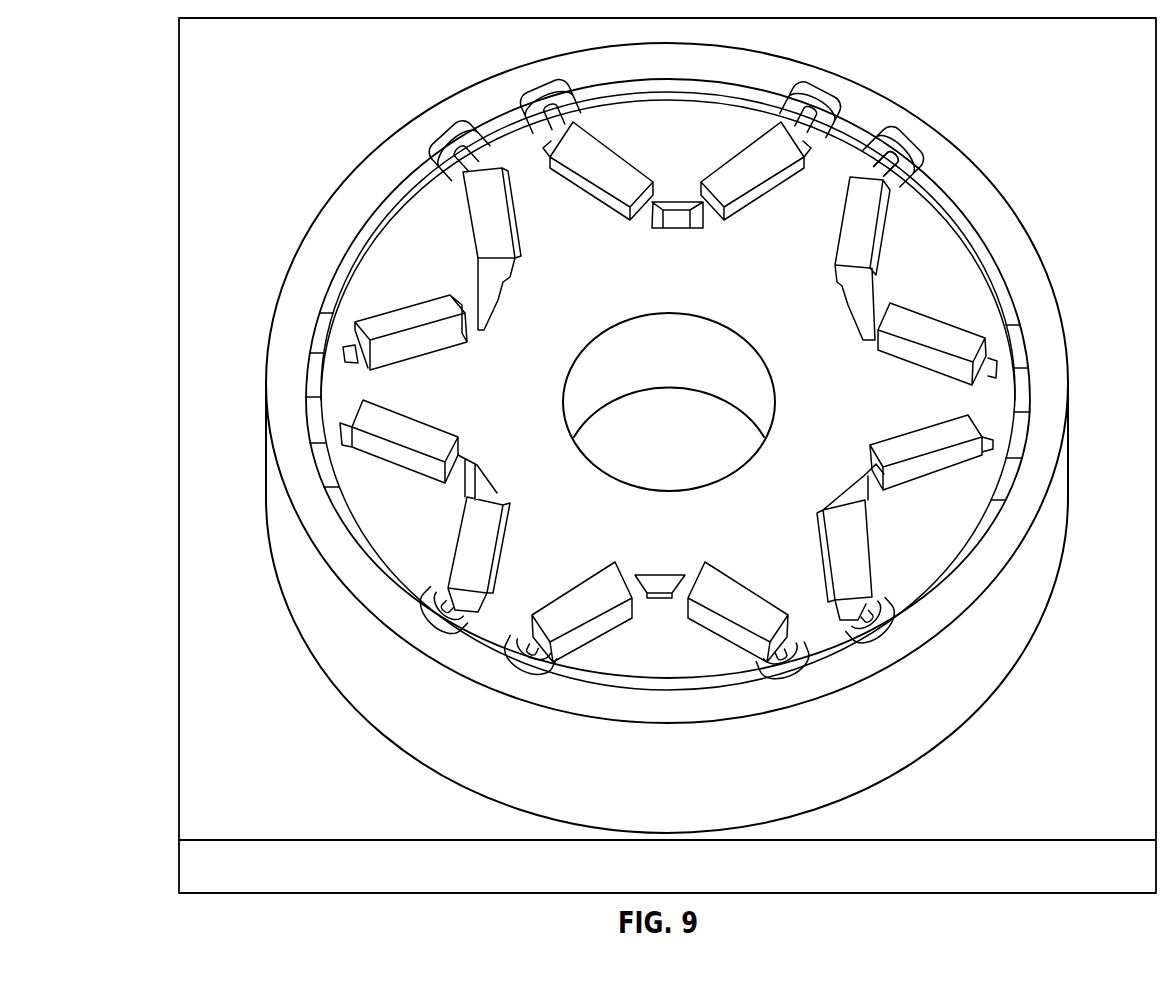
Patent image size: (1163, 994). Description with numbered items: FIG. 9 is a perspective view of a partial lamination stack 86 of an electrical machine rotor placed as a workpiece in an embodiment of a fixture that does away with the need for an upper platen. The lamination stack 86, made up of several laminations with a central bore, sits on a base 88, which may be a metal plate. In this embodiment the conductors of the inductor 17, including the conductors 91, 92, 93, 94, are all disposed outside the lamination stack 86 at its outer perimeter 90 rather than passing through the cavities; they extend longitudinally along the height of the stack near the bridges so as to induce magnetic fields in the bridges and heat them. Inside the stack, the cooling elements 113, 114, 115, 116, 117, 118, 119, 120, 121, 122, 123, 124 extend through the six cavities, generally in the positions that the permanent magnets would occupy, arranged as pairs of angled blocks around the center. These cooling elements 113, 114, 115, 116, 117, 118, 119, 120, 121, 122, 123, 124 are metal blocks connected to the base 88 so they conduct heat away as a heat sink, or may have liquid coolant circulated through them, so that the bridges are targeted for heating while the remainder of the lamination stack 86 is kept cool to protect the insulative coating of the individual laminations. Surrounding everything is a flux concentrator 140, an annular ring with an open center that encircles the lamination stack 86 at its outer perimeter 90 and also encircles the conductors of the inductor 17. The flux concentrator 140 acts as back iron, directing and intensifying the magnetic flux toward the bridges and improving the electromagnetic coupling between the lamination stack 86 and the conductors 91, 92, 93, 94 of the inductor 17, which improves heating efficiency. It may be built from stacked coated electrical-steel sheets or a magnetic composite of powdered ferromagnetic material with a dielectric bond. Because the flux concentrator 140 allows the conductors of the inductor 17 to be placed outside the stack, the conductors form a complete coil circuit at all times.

The inductor 17 is at (815, 88).
The lamination stack 86 is at (684, 285).
The base 88 is at (1084, 883).
The outer perimeter 90 is at (977, 515).
The conductor 91 is at (880, 160).
The conductor 92 is at (905, 175).
The conductor 93 is at (1006, 322).
The conductor 94 is at (1016, 370).
The cooling element 113 is at (857, 252).
The cooling element 114 is at (918, 355).
The cooling element 115 is at (900, 435).
The cooling element 116 is at (840, 545).
The cooling element 117 is at (735, 603).
The cooling element 118 is at (614, 584).
The cooling element 119 is at (476, 549).
The cooling element 120 is at (407, 423).
The cooling element 121 is at (428, 318).
The cooling element 122 is at (495, 223).
The cooling element 123 is at (588, 147).
The cooling element 124 is at (768, 158).
The flux concentrator 140 is at (878, 757).